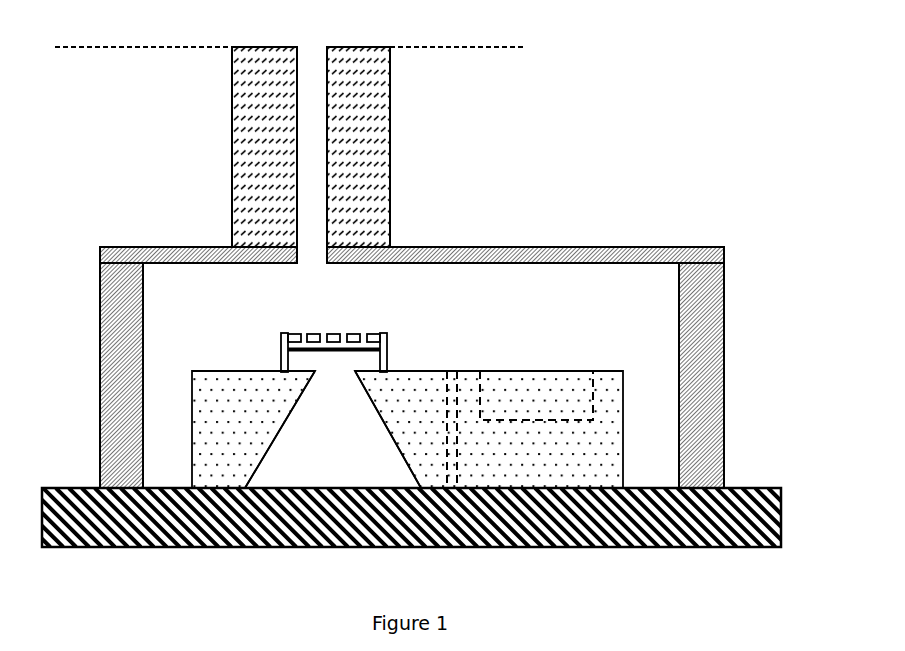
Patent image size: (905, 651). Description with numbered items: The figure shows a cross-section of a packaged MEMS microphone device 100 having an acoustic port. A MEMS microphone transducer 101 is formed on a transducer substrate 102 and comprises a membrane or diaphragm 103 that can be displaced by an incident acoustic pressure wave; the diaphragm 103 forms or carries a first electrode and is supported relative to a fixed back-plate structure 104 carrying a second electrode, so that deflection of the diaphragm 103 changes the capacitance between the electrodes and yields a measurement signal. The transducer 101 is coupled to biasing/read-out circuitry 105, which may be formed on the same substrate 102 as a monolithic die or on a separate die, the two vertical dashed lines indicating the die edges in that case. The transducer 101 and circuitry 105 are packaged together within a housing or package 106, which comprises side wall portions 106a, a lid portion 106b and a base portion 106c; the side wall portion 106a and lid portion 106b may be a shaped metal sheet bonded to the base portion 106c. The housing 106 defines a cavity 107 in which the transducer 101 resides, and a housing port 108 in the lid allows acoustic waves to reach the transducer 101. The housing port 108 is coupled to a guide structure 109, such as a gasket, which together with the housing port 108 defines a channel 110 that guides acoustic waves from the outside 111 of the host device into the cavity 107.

The packaged MEMS microphone device 100 is at (670, 204).
The MEMS microphone transducer 101 is at (405, 325).
The transducer substrate 102 is at (227, 371).
The membrane or diaphragm 103 is at (307, 354).
The back-plate structure 104 is at (356, 334).
The biasing/read-out circuitry 105 is at (510, 371).
The housing or package 106 is at (90, 358).
The side wall portion 106a is at (724, 314).
The lid portion 106b is at (160, 247).
The base portion 106c is at (745, 488).
The cavity 107 is at (640, 298).
The housing port 108 is at (308, 258).
The guide structure 109 is at (390, 134).
The channel 110 is at (308, 52).
The outside 111 is at (171, 21).